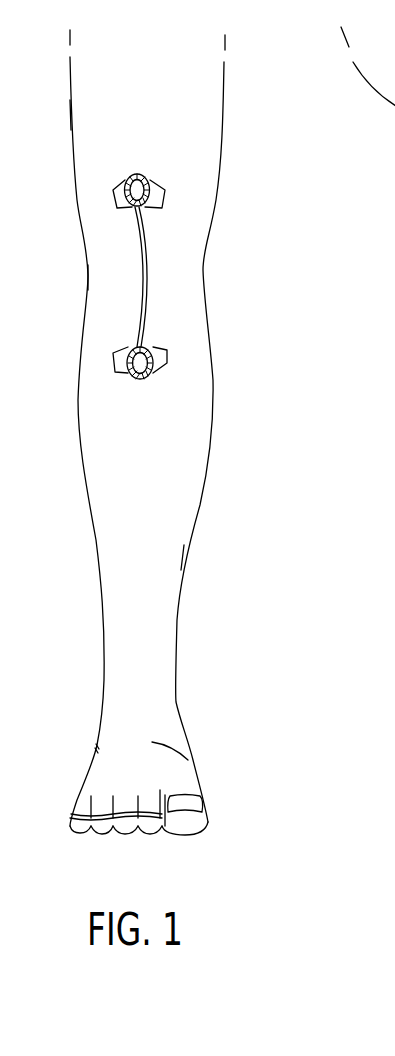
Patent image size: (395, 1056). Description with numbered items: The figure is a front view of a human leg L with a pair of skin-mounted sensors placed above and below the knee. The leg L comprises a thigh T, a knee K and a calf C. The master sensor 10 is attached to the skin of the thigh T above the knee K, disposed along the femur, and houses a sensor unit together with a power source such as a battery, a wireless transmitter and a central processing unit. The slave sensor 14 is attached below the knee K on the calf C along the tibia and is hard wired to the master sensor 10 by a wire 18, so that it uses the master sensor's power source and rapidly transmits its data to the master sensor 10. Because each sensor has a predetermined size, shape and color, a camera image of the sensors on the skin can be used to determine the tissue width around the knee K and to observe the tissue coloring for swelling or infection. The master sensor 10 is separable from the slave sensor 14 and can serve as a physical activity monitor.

The master sensor 10 is at (165, 192).
The slave sensor 14 is at (165, 365).
The wire 18 is at (150, 272).
The thigh T is at (100, 120).
The knee K is at (120, 285).
The calf C is at (172, 548).
The leg L is at (55, 561).